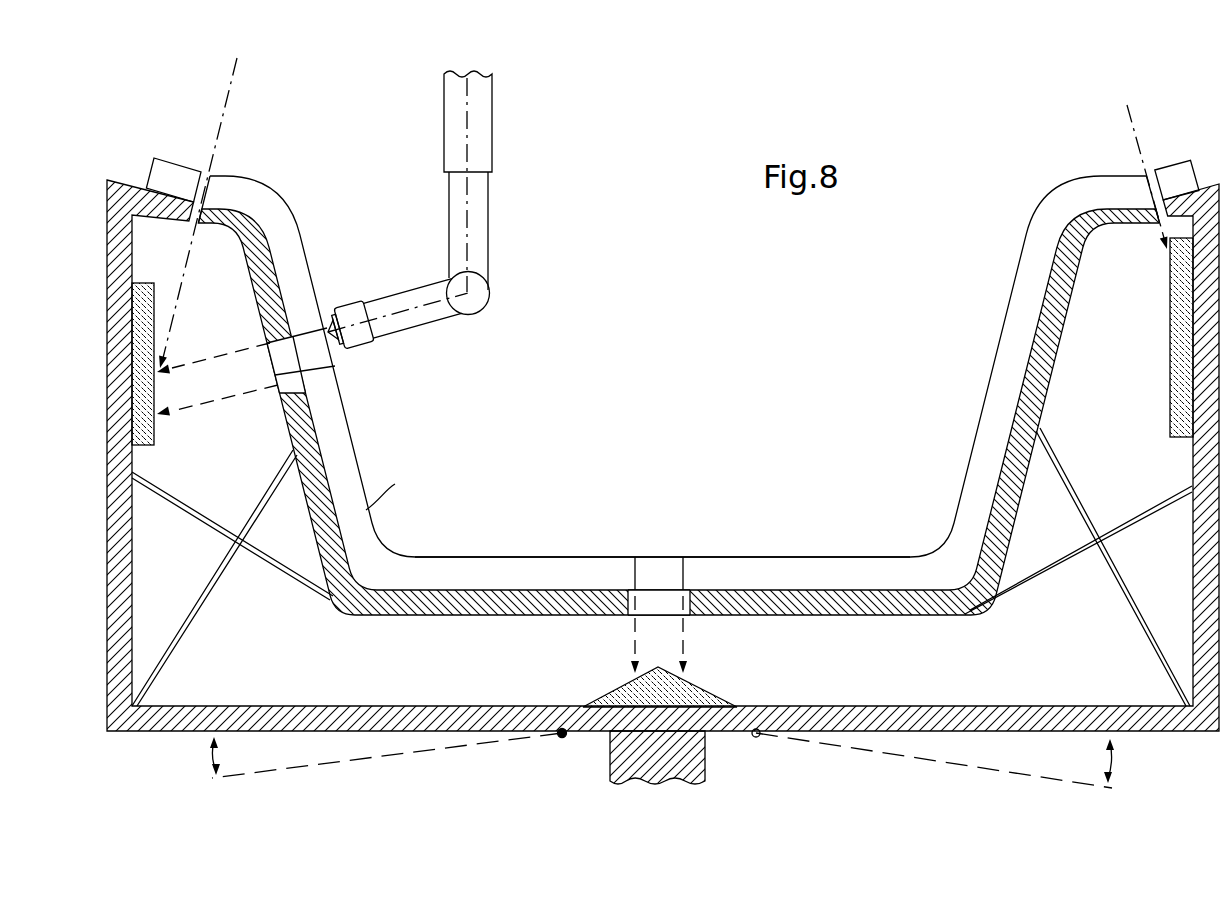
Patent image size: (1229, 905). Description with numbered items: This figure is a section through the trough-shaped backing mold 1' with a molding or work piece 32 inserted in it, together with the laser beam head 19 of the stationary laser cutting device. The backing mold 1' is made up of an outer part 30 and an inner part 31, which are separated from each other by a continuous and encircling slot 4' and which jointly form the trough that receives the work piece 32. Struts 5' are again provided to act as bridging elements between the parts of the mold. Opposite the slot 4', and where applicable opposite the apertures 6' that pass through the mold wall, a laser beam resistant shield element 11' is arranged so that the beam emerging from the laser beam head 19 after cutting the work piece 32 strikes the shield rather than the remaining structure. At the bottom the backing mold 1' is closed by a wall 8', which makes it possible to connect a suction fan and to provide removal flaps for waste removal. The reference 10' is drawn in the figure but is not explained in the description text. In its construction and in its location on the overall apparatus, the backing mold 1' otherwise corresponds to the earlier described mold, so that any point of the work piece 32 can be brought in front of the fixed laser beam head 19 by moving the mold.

The outer part 30 is at (123, 190).
The inner part 31 is at (262, 268).
The work piece 32 is at (352, 445).
The backing mold 1' is at (662, 549).
The slot 4' is at (672, 213).
The laser beam head 19 is at (356, 306).
The apertures 6' is at (422, 500).
The laser beam resistant shield element 11' is at (662, 472).
The struts 5' is at (662, 567).
The wall 8' is at (473, 718).
The pivot axis 10' is at (662, 776).